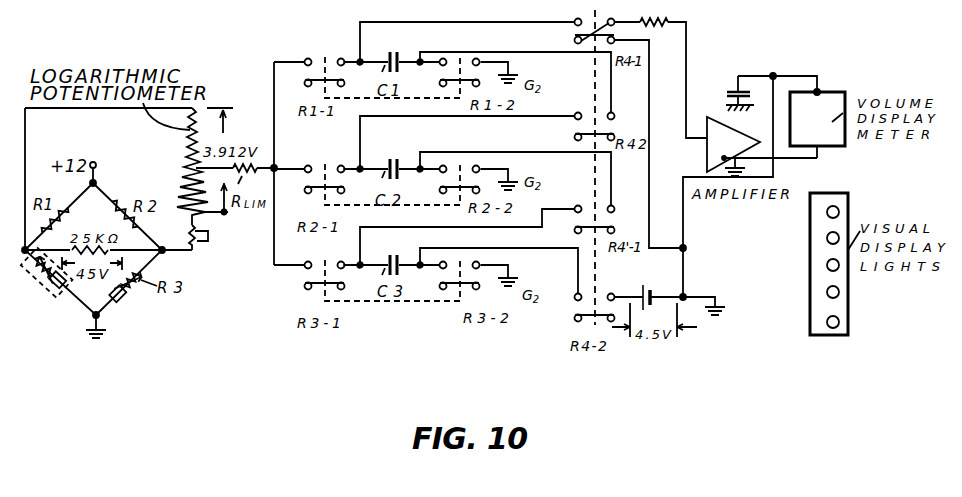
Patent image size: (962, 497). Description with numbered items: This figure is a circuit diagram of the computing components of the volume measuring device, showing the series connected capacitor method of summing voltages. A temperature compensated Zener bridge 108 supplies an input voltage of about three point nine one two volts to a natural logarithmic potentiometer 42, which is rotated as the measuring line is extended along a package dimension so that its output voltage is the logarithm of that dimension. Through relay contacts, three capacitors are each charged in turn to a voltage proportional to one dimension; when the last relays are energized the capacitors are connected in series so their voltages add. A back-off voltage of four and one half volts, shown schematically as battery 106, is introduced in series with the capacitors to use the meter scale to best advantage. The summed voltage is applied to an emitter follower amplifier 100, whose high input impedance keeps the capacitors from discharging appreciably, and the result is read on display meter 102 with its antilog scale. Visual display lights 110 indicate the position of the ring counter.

The natural logarithmic potentiometer 42 is at (184, 170).
The emitter follower amplifier 100 is at (712, 120).
The display meter 102 is at (843, 143).
The battery 106 is at (660, 277).
The temperature compensated Zener bridge 108 is at (79, 306).
The visual display lights 110 is at (848, 327).